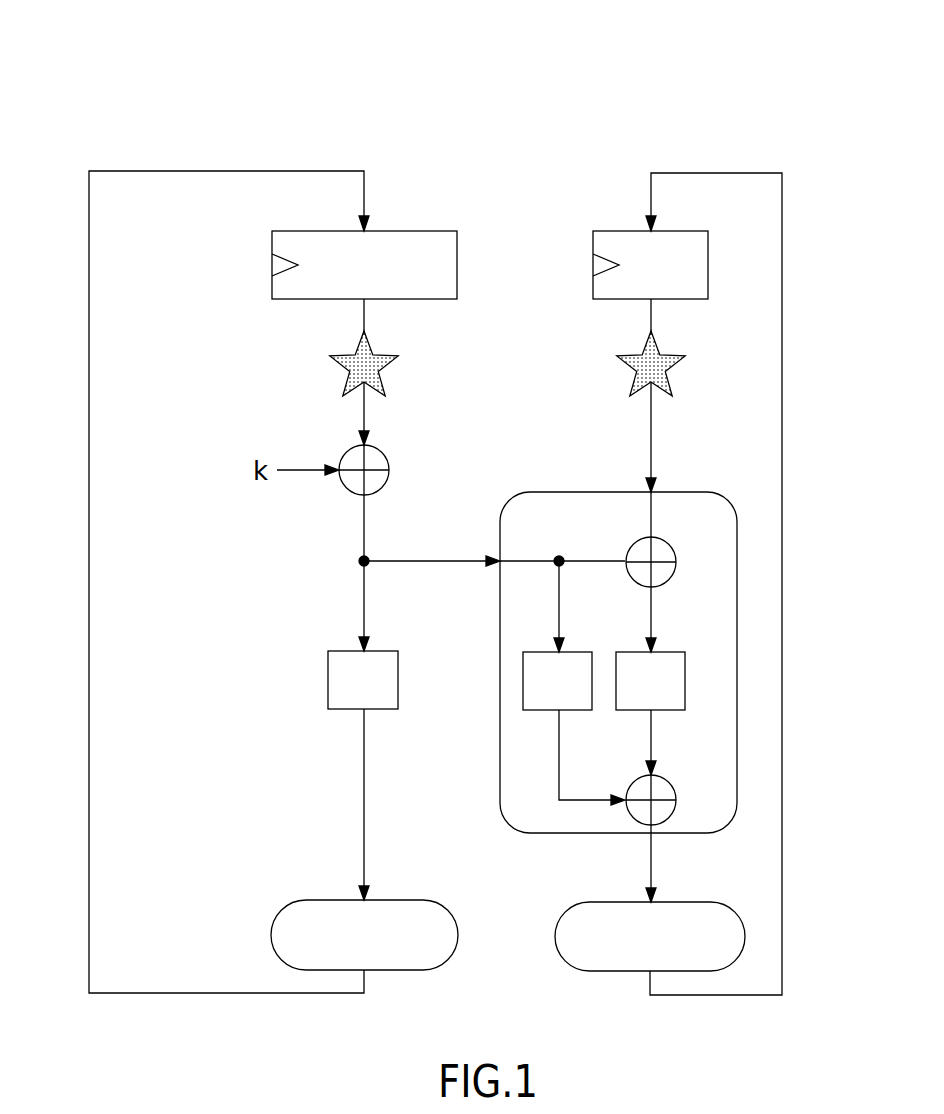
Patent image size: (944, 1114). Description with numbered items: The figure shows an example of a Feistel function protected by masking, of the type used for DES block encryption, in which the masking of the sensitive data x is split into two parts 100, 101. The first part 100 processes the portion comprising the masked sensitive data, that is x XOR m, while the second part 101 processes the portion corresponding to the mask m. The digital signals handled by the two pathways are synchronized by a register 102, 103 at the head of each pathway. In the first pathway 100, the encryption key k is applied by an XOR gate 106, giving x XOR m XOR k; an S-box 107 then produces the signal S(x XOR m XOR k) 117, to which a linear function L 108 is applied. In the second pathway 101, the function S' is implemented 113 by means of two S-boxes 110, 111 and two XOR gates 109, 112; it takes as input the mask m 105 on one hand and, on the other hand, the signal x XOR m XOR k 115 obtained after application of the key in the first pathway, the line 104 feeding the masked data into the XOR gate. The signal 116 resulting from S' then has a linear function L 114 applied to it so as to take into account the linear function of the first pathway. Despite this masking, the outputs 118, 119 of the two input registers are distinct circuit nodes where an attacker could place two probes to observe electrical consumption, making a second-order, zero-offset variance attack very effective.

The first part 100 is at (183, 102).
The second part 101 is at (740, 102).
The register 102 is at (400, 231).
The register 103 is at (619, 231).
The data input line to XOR 104 is at (352, 437).
The mask m 105 is at (655, 448).
The XOR gate 106 is at (391, 462).
The S-box 107 is at (328, 688).
The linear function L 108 is at (271, 938).
The XOR gate 109 is at (668, 546).
The substitution unit S for combined value 110 is at (636, 710).
The substitution unit S for masked data 111 is at (542, 710).
The XOR gate 112 is at (708, 772).
The S' function implementation 113 is at (498, 766).
The linear function L 114 is at (553, 942).
The signal x XOR m XOR k 115 is at (492, 568).
The signal resulting from S' 116 is at (642, 897).
The signal S(x XOR m XOR k) 117 is at (357, 895).
The output of input register 118 is at (398, 370).
The output of input register 119 is at (686, 370).